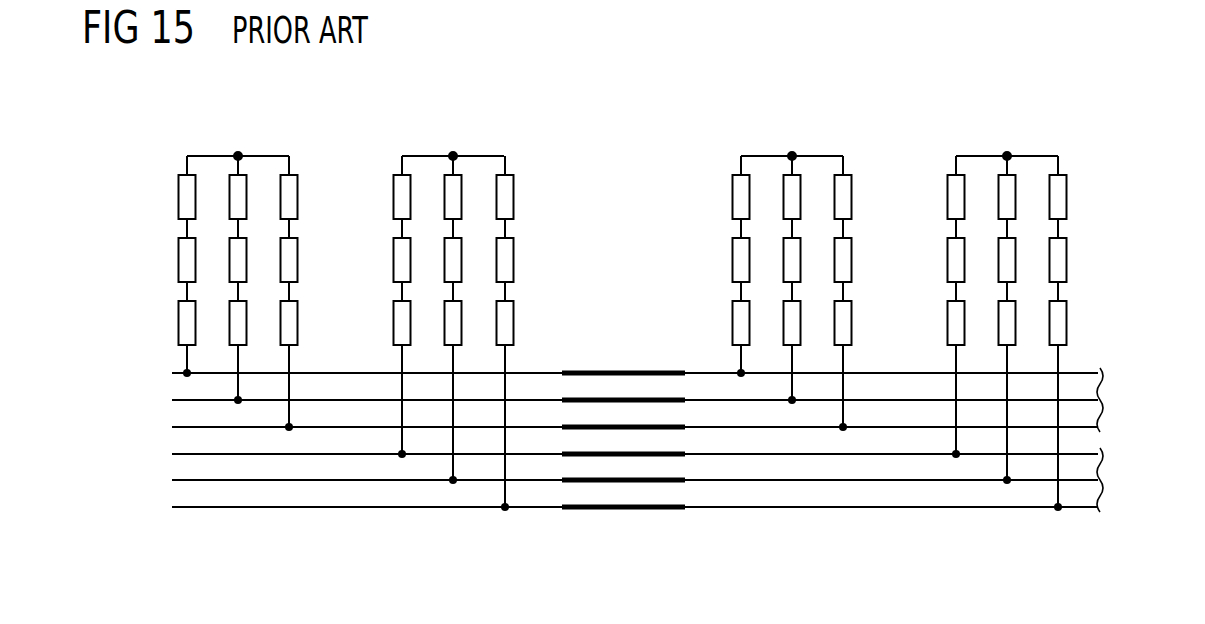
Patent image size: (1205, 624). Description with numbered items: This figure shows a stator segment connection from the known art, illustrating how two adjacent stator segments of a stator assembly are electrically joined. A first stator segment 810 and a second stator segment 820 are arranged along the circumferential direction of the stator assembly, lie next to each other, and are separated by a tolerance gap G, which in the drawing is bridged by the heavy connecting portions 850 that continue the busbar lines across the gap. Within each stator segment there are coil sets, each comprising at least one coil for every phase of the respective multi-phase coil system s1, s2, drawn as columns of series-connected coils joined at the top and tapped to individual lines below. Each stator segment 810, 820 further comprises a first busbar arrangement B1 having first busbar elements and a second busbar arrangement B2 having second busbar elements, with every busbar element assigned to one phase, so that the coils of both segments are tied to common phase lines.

The first stator segment 810 is at (132, 119).
The second stator segment 820 is at (894, 368).
The bus bar gap region 850 is at (622, 342).
The tolerance gap G is at (682, 530).
The multi-phase coil system s1 is at (515, 114).
The multi-phase coil system s2 is at (730, 114).
The first busbar arrangement B1 is at (1135, 398).
The second busbar arrangement B2 is at (1135, 478).